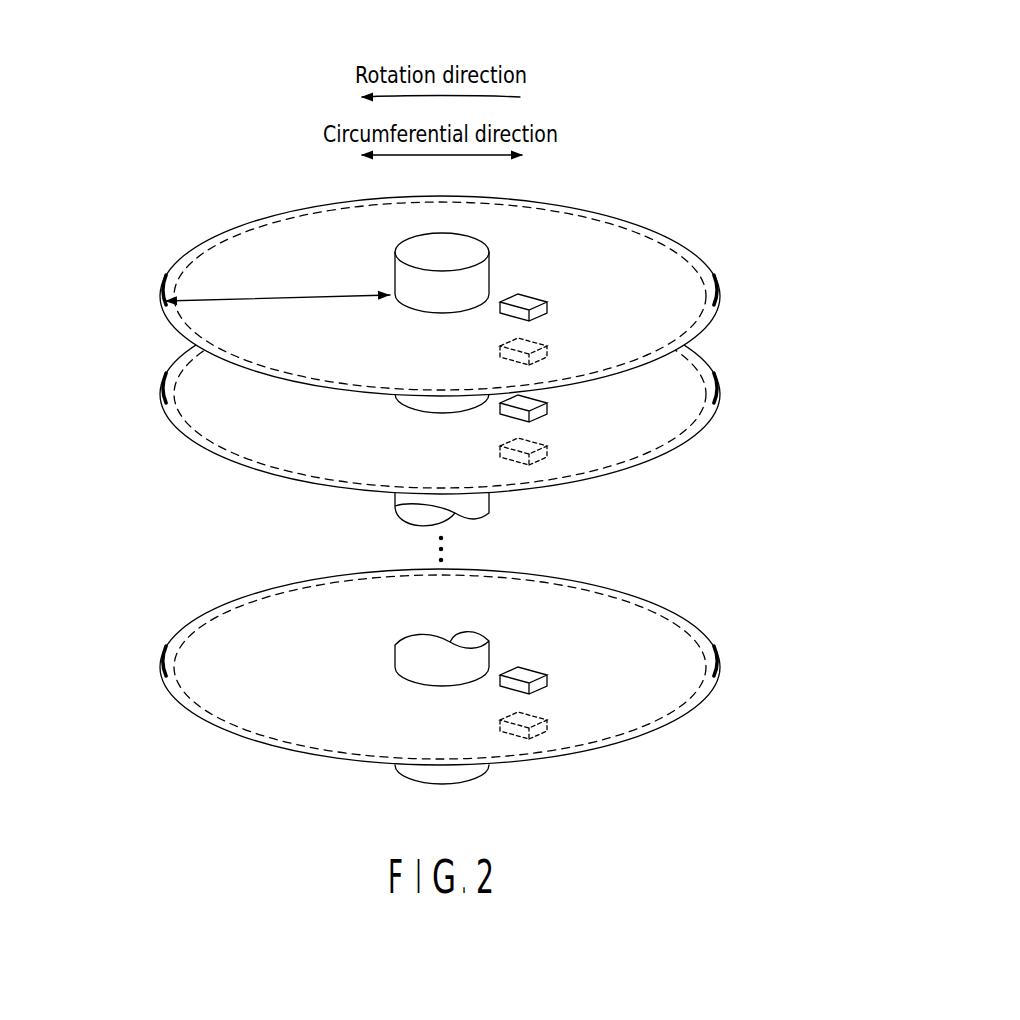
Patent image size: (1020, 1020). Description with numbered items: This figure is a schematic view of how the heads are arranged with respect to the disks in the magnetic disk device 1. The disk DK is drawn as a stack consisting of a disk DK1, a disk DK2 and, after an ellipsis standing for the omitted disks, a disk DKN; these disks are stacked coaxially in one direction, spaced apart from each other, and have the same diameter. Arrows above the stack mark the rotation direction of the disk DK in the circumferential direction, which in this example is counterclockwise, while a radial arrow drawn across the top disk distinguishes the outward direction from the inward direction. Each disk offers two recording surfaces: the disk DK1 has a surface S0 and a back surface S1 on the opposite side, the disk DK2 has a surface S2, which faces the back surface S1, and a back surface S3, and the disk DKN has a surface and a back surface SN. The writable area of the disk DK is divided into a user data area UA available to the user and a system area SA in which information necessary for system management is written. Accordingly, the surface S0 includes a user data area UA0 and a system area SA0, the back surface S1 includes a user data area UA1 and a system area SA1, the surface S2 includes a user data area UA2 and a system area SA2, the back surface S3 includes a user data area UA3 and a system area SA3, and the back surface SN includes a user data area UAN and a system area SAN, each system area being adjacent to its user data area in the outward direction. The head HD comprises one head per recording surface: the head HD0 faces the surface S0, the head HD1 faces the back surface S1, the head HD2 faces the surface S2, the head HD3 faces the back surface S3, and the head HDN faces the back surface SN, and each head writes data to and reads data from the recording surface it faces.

The magnetic disk device 1 is at (673, 69).
The disk DK is at (185, 218).
The disk DK1 is at (157, 296).
The disk DK2 is at (157, 394).
The disk DKN is at (157, 667).
The surface S0 is at (163, 284).
The back surface S1 is at (163, 316).
The surface S2 is at (163, 382).
The back surface S3 is at (163, 419).
The back surface SN is at (163, 691).
The head HD is at (539, 276).
The head HD0 is at (548, 306).
The head HD1 is at (500, 352).
The head HD2 is at (548, 405).
The head HD3 is at (500, 450).
The head HDN is at (500, 722).
The user data area UA is at (601, 142).
The user data area UA0 is at (599, 247).
The user data area UA1 is at (610, 340).
The user data area UA2 is at (606, 426).
The user data area UA3 is at (609, 460).
The user data area UAN is at (600, 724).
The system area SA is at (700, 149).
The system area SA0 is at (717, 278).
The system area SA1 is at (722, 311).
The system area SA2 is at (717, 376).
The system area SA3 is at (722, 409).
The system area SAN is at (722, 682).